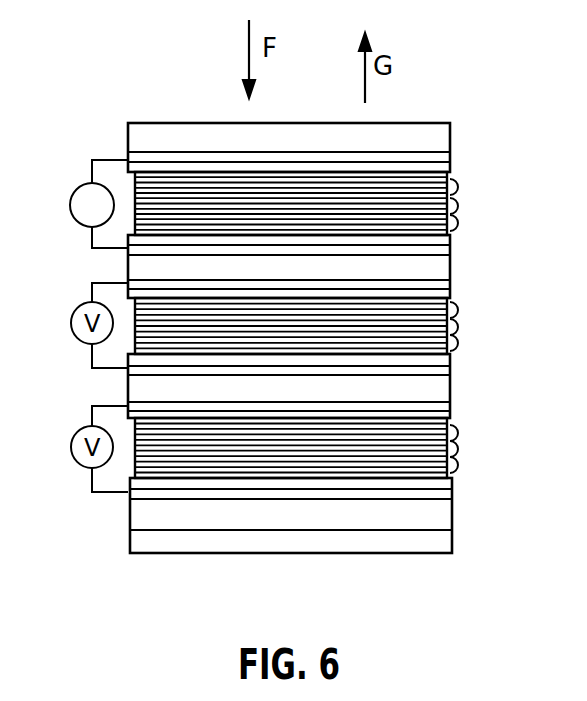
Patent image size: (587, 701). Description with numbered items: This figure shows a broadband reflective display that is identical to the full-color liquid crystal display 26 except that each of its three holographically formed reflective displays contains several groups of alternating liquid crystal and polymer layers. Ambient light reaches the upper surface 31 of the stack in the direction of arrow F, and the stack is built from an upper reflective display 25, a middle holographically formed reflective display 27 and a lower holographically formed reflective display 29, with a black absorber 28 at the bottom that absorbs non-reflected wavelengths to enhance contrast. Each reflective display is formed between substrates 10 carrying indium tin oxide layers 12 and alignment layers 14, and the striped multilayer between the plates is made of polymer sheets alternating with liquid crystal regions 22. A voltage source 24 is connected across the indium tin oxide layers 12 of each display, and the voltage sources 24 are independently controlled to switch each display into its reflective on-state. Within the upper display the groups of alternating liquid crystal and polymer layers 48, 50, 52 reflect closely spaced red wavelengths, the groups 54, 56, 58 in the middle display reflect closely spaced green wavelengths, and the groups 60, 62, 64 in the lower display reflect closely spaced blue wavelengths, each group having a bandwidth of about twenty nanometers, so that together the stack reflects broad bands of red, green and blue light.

The substrate 10 is at (298, 116).
The indium tin oxide layer 12 is at (128, 158).
The alignment layer 14 is at (448, 170).
The liquid crystal region 22 is at (140, 442).
The voltage source 24 is at (72, 195).
The upper reflective display 25 is at (443, 130).
The full-color liquid crystal display 26 is at (275, 112).
The middle holographically formed reflective display 27 is at (443, 274).
The black absorber 28 is at (446, 545).
The lower holographically formed reflective display 29 is at (452, 392).
The upper surface 31 is at (405, 123).
The group of alternating liquid crystal and polymer layers 48 is at (458, 187).
The group of alternating liquid crystal and polymer layers 50 is at (458, 206).
The group of alternating liquid crystal and polymer layers 52 is at (458, 223).
The group of alternating liquid crystal and polymer layers 54 is at (458, 310).
The group of alternating liquid crystal and polymer layers 56 is at (458, 327).
The group of alternating liquid crystal and polymer layers 58 is at (458, 343).
The group of alternating liquid crystal and polymer layers 60 is at (458, 433).
The group of alternating liquid crystal and polymer layers 62 is at (458, 450).
The group of alternating liquid crystal and polymer layers 64 is at (458, 468).